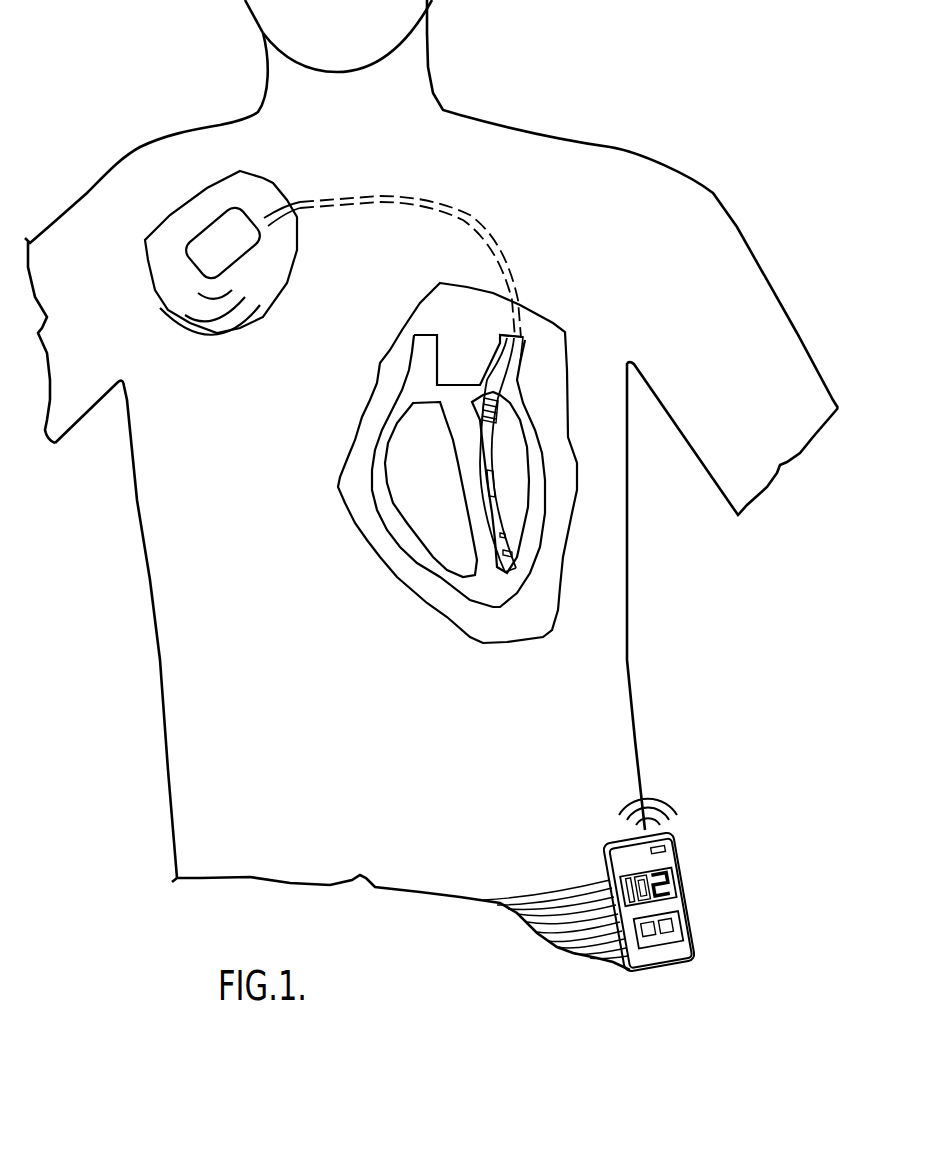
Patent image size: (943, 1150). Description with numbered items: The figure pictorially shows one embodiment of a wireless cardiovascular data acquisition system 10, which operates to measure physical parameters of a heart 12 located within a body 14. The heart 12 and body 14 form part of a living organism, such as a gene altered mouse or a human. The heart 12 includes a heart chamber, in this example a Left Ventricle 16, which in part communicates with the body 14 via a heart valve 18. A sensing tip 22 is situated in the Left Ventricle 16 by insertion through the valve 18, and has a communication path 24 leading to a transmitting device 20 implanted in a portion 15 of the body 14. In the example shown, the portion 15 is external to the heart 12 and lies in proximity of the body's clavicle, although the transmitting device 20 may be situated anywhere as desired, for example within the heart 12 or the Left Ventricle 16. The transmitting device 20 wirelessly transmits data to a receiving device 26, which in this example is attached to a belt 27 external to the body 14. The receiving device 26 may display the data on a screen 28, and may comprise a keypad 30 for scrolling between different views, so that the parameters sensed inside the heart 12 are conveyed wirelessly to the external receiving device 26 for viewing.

The wireless cardiovascular data acquisition system 10 is at (682, 683).
The heart 12 is at (463, 370).
The body 14 is at (578, 130).
The portion 15 is at (265, 185).
The Left Ventricle 16 is at (513, 520).
The heart valve 18 is at (510, 360).
The transmitting device 20 is at (248, 267).
The sensing tip 22 is at (490, 442).
The communication path 24 is at (455, 210).
The receiving device 26 is at (693, 867).
The belt 27 is at (578, 932).
The screen 28 is at (677, 880).
The keypad 30 is at (680, 933).